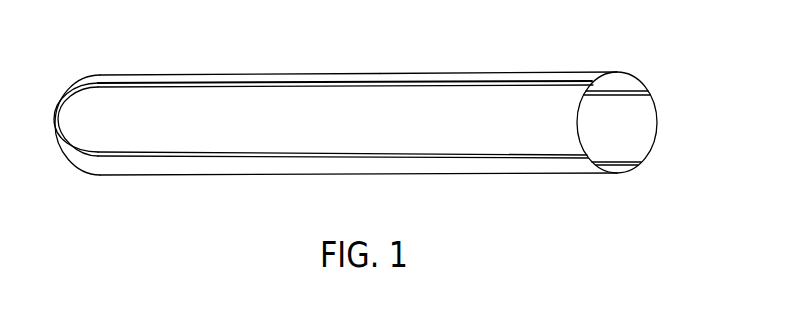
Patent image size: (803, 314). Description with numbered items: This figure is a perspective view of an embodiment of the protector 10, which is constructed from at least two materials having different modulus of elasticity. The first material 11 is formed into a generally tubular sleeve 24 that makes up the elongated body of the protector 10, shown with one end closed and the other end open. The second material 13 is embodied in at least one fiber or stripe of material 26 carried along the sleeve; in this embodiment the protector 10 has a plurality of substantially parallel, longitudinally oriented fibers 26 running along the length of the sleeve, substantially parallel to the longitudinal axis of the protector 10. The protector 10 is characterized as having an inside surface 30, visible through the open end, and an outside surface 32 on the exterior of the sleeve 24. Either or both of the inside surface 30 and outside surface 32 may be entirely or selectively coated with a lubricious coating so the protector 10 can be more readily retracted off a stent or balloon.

The protector 10 is at (375, 139).
The first material 11 is at (386, 90).
The second material 13 is at (188, 79).
The tubular sleeve 24 is at (527, 73).
The fiber 26 is at (289, 83).
The inside surface 30 is at (653, 125).
The outside surface 32 is at (520, 166).